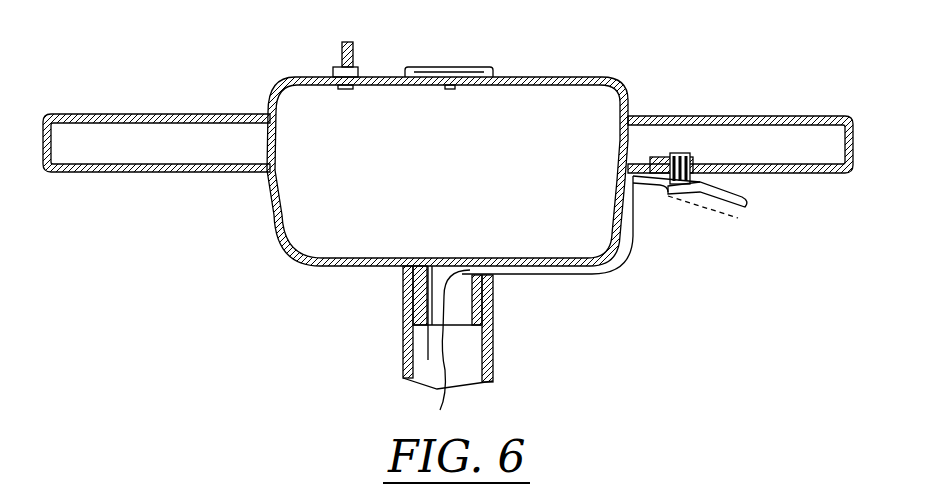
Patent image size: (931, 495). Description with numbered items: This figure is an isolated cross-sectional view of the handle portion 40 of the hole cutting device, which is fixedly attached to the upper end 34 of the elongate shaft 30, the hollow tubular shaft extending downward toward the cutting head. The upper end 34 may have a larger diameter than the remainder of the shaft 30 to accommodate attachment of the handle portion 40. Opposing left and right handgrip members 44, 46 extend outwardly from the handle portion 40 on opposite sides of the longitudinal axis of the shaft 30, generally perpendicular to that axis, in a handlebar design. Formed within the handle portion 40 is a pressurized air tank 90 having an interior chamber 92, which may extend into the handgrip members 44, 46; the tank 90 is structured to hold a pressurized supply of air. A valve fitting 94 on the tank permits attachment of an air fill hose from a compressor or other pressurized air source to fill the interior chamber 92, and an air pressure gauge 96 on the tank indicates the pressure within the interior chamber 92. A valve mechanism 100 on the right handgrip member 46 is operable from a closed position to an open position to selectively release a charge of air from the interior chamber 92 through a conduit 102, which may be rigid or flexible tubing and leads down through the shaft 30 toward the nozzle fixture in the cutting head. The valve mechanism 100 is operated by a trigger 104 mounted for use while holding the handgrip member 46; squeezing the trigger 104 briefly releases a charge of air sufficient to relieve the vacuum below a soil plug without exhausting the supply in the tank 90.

The elongate shaft 30 is at (500, 371).
The upper end of the shaft 34 is at (494, 303).
The handle portion 40 is at (683, 42).
The left handgrip member 44 is at (170, 116).
The right handgrip member 46 is at (797, 73).
The pressurized air tank 90 is at (282, 236).
The interior chamber 92 is at (496, 175).
The valve fitting 94 is at (345, 64).
The air pressure gauge 96 is at (468, 66).
The valve mechanism 100 is at (690, 160).
The conduit 102 is at (614, 265).
The trigger 104 is at (710, 188).